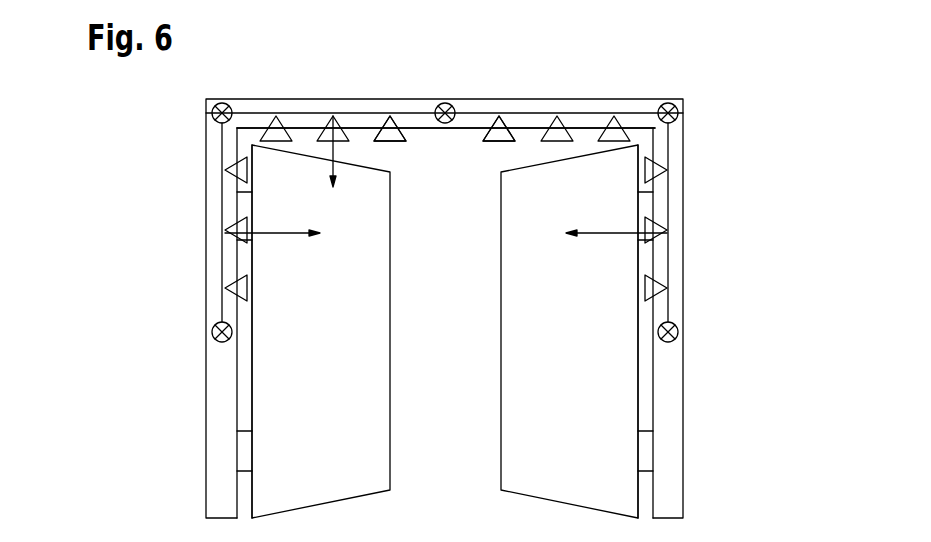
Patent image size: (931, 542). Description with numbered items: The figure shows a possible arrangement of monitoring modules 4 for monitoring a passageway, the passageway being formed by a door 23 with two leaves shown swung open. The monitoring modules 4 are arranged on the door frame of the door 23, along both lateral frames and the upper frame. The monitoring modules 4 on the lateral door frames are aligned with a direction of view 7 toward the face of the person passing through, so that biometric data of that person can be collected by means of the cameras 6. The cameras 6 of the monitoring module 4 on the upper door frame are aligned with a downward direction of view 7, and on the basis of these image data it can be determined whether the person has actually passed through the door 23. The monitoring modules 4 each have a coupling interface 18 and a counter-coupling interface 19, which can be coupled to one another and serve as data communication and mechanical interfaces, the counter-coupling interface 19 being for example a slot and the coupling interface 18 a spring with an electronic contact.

The monitoring module 4 is at (222, 261).
The camera 6 is at (401, 125).
The direction of view 7 is at (335, 152).
The coupling interface 18 is at (212, 332).
The counter-coupling interface 19 is at (678, 332).
The door 23 is at (683, 488).